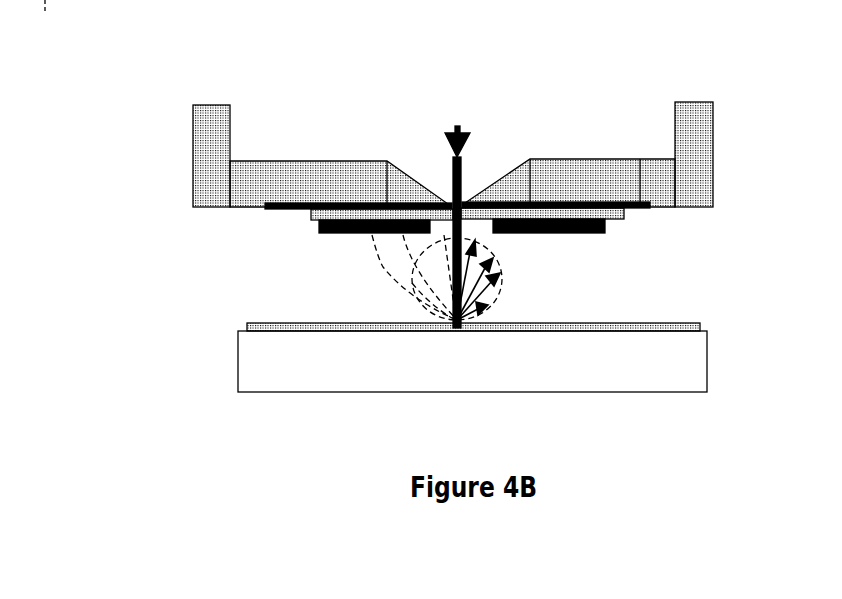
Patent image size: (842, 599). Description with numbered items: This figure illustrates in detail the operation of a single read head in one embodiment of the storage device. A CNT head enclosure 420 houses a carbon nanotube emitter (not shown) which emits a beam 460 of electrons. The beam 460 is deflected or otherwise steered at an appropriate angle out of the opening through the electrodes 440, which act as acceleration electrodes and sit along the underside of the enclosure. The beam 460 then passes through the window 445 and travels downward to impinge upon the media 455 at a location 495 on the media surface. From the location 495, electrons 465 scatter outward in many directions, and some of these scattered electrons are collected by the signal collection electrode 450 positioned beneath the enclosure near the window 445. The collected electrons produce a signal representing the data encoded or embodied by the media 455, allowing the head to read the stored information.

The CNT head enclosure 420 is at (245, 70).
The electrodes 440 is at (648, 203).
The window 445 is at (645, 226).
The signal collection electrode 450 is at (316, 240).
The media 455 is at (472, 361).
The beam 460 is at (494, 215).
The electrons 465 is at (563, 288).
The location 495 is at (457, 332).